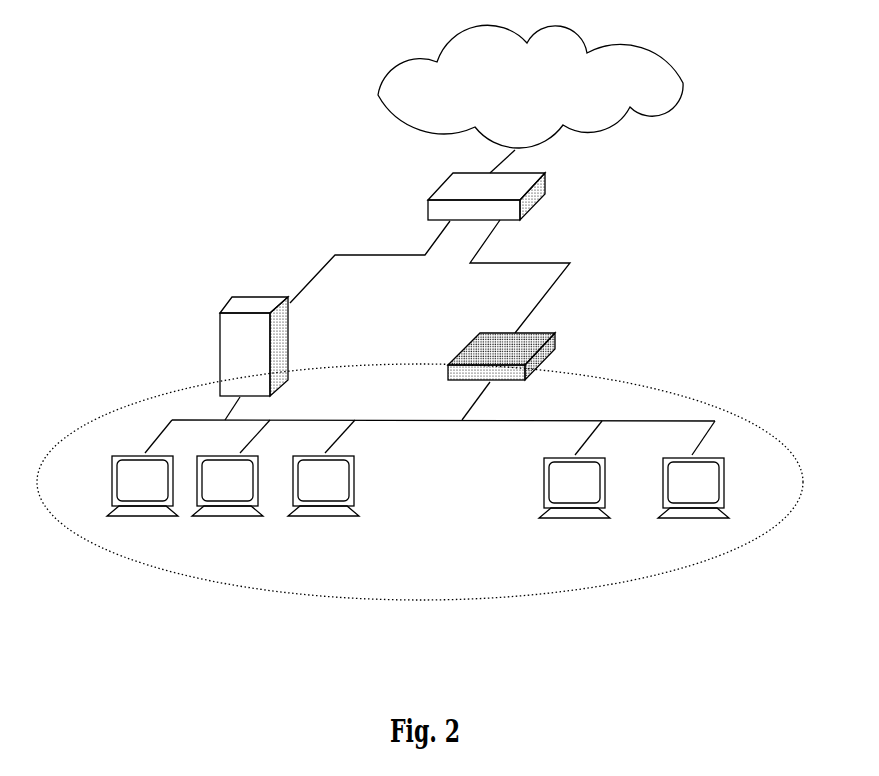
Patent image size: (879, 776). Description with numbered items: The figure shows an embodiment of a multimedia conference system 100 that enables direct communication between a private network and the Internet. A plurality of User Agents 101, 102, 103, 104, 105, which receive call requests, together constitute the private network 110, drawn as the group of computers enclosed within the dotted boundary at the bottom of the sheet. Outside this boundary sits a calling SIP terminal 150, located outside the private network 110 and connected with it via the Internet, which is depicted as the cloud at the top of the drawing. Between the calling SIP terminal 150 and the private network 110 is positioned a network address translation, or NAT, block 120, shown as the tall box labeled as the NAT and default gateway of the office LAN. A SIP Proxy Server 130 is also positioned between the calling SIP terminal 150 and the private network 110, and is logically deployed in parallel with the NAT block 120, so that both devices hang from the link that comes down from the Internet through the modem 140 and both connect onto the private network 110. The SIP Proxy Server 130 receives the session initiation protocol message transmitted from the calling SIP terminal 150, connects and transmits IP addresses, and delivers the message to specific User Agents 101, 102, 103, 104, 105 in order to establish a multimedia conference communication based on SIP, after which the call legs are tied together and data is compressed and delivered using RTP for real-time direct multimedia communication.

The multimedia conference system 100 is at (420, 312).
The User Agent 101 is at (142, 489).
The User Agent 102 is at (231, 489).
The User Agent 103 is at (323, 489).
The User Agent 104 is at (574, 490).
The User Agent 105 is at (693, 490).
The private network 110 is at (420, 482).
The network address translation (NAT) 120 is at (203, 312).
The SIP Proxy Server 130 is at (596, 341).
The ADSL modem 140 is at (436, 200).
The calling SIP terminal 150 is at (531, 86).